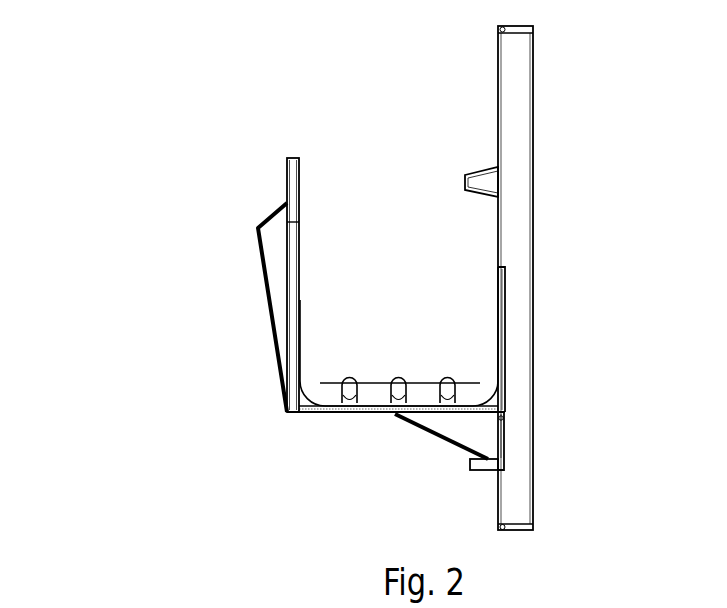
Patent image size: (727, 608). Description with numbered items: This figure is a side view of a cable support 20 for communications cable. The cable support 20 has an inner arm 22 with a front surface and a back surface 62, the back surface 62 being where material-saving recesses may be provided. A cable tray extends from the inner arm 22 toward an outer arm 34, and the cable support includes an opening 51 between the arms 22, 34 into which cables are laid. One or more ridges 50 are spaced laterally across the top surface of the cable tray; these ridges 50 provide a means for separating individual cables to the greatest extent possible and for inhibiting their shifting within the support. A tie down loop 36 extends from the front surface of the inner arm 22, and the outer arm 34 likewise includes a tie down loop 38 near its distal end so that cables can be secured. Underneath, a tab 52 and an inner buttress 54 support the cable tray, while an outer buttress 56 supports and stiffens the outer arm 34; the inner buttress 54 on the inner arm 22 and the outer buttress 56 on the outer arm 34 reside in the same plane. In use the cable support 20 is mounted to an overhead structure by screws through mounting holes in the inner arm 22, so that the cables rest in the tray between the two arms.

The cable support 20 is at (172, 190).
The inner arm 22 is at (515, 152).
The outer arm 34 is at (396, 318).
The tie down loop 36 is at (465, 182).
The tie down loop 38 is at (297, 170).
The ridges 50 is at (348, 380).
The opening 51 is at (386, 177).
The tab 52 is at (478, 472).
The inner buttress 54 is at (440, 440).
The outer buttress 56 is at (224, 307).
The back surface 62 is at (550, 265).